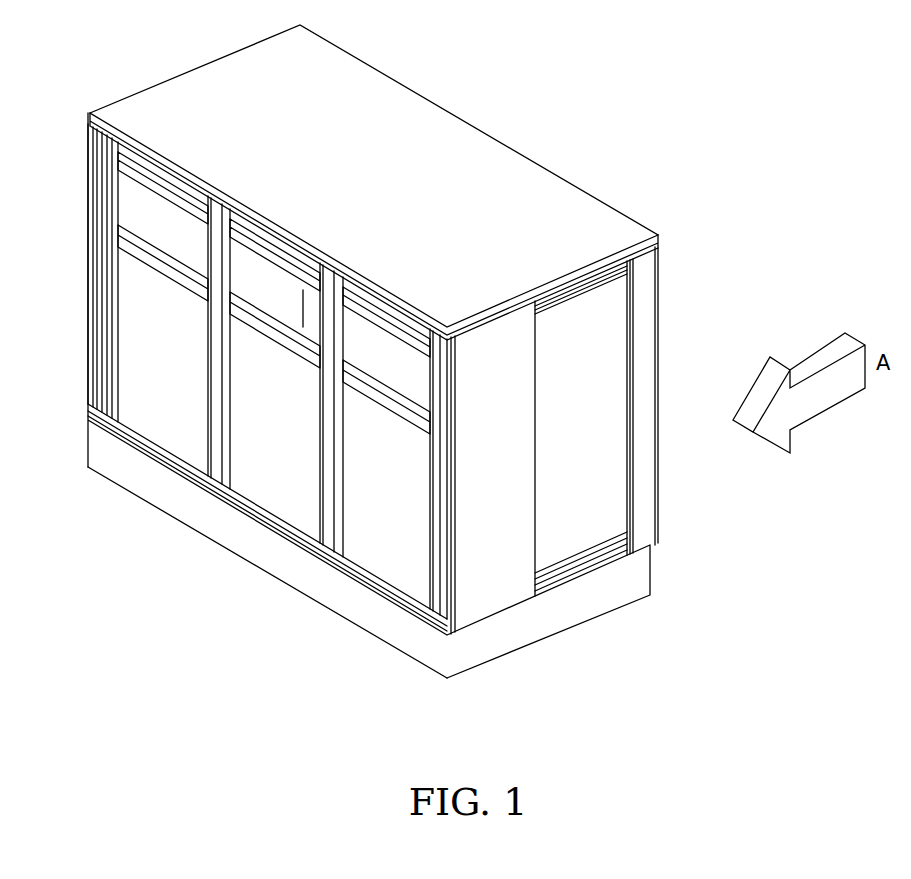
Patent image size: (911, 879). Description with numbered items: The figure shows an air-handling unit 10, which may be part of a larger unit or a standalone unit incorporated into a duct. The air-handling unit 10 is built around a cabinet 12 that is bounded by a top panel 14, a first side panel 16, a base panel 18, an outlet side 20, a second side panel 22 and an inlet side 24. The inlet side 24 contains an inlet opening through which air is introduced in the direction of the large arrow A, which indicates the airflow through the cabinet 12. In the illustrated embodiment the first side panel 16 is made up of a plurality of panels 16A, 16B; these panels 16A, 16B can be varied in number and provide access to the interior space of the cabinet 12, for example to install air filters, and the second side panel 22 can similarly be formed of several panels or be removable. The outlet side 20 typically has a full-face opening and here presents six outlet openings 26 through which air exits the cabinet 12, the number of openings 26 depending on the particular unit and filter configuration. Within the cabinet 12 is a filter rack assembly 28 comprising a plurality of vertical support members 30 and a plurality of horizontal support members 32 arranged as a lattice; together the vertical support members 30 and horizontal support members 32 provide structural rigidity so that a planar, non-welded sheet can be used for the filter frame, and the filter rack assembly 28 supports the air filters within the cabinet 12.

The air-handling unit 10 is at (727, 174).
The cabinet 12 is at (240, 44).
The top panel 14 is at (412, 128).
The first side panel 16 is at (621, 469).
The panel 16A is at (507, 580).
The panel 16B is at (612, 490).
The base panel 18 is at (408, 666).
The outlet side 20 is at (100, 456).
The second side panel 22 is at (88, 150).
The inlet side 24 is at (676, 295).
The outlet openings 26 is at (148, 218).
The filter rack assembly 28 is at (148, 440).
The vertical support members 30 is at (208, 352).
The horizontal support members 32 is at (100, 194).